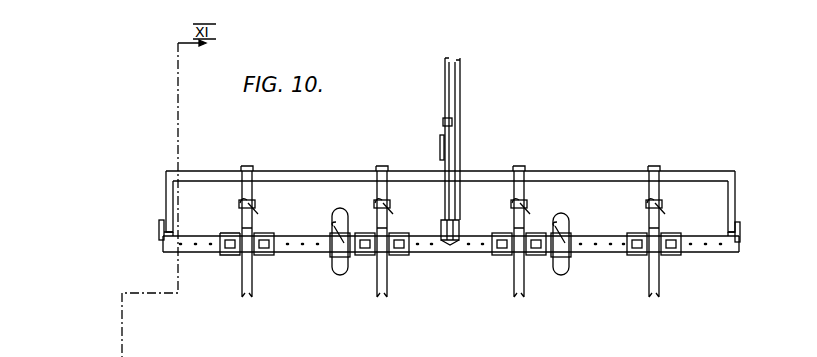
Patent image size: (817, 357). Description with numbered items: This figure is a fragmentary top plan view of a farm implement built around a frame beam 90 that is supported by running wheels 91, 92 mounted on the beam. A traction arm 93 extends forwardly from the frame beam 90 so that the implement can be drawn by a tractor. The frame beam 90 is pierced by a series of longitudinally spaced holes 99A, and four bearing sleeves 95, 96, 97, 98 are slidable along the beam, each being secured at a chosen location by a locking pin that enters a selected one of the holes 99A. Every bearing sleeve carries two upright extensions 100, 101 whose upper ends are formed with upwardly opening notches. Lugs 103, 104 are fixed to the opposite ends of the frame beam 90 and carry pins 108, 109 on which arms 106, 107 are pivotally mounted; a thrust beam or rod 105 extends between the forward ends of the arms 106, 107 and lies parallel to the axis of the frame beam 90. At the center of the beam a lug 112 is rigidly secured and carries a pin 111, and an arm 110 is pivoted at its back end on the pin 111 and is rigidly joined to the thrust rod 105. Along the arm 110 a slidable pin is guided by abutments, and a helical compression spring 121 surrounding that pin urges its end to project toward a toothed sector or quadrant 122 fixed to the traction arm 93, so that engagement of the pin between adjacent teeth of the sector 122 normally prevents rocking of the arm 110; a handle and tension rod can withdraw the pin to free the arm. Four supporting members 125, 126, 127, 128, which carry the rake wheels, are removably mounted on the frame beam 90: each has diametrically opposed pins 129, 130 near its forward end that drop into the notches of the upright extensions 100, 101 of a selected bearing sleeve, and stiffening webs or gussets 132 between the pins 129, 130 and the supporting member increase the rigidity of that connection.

The frame beam 90 is at (742, 261).
The running wheel 91 is at (565, 275).
The running wheel 92 is at (337, 272).
The traction arm 93 is at (460, 85).
The bearing sleeve 95 is at (224, 256).
The bearing sleeve 96 is at (406, 256).
The bearing sleeve 97 is at (496, 256).
The bearing sleeve 98 is at (677, 256).
The holes 99A is at (607, 238).
The upright extension 100 is at (232, 256).
The upright extension 101 is at (264, 256).
The lug 103 is at (163, 241).
The lug 104 is at (740, 239).
The thrust beam or rod 105 is at (694, 175).
The arm 106 is at (166, 193).
The arm 107 is at (735, 196).
The pin 108 is at (159, 226).
The pin 109 is at (740, 228).
The arm 110 is at (456, 110).
The pin 111 is at (459, 229).
The lug 112 is at (451, 247).
The helical compression spring 121 is at (443, 122).
The sector or quadrant 122 is at (440, 148).
The supporting member 125 is at (244, 298).
The supporting member 126 is at (384, 298).
The supporting member 127 is at (518, 298).
The supporting member 128 is at (656, 298).
The pin 129 is at (228, 236).
The pin 130 is at (274, 238).
The stiffening web or gusset 132 is at (253, 210).